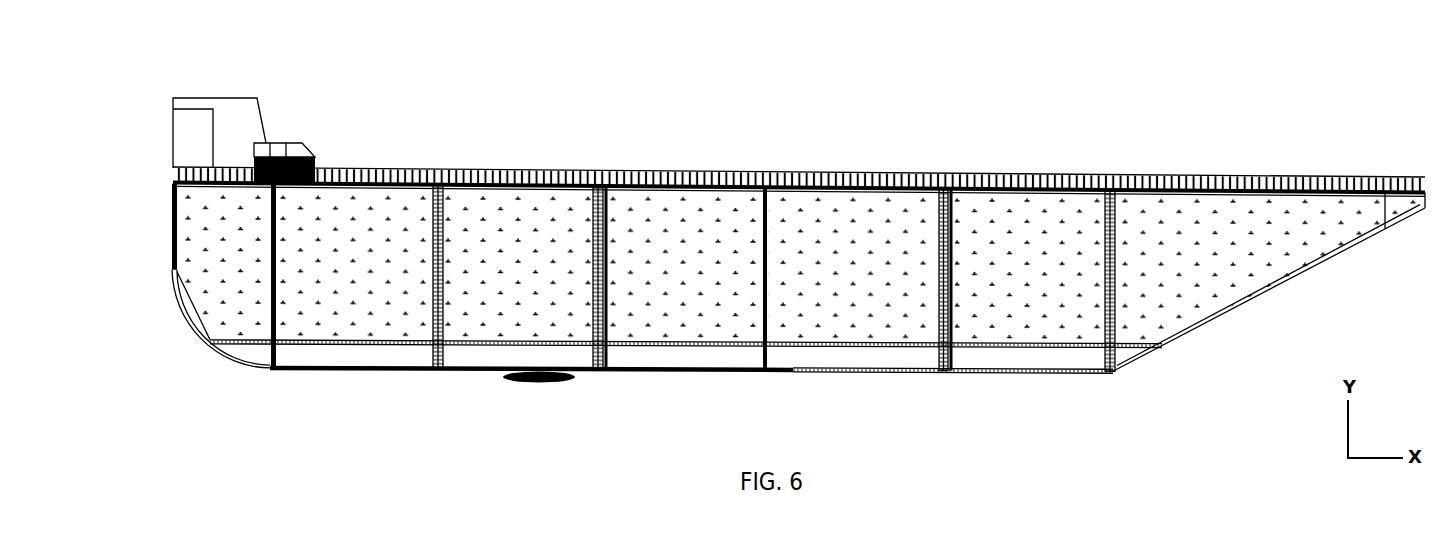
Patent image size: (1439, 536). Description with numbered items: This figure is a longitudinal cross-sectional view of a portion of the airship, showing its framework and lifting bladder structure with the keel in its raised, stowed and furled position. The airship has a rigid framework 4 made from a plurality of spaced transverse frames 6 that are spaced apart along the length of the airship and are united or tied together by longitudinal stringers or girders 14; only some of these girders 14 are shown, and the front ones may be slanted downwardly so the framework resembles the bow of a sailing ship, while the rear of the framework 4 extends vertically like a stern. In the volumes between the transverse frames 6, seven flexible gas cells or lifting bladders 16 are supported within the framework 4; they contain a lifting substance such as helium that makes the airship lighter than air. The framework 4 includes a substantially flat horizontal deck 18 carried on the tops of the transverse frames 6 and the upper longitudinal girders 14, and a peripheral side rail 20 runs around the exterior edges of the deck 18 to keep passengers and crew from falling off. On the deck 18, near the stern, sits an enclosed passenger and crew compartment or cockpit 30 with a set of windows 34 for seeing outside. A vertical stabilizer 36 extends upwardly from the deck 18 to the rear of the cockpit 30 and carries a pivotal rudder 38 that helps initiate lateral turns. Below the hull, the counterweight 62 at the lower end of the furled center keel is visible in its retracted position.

The rigid framework 4 is at (1003, 373).
The transverse frames 6 is at (443, 190).
The longitudinal girders 14 is at (1257, 297).
The lifting bladders 16 is at (352, 207).
The deck 18 is at (912, 182).
The peripheral side rail 20 is at (1028, 175).
The cockpit 30 is at (315, 160).
The windows 34 is at (280, 153).
The vertical stabilizer 36 is at (233, 115).
The rudder 38 is at (185, 140).
The counterweight 62 is at (542, 380).